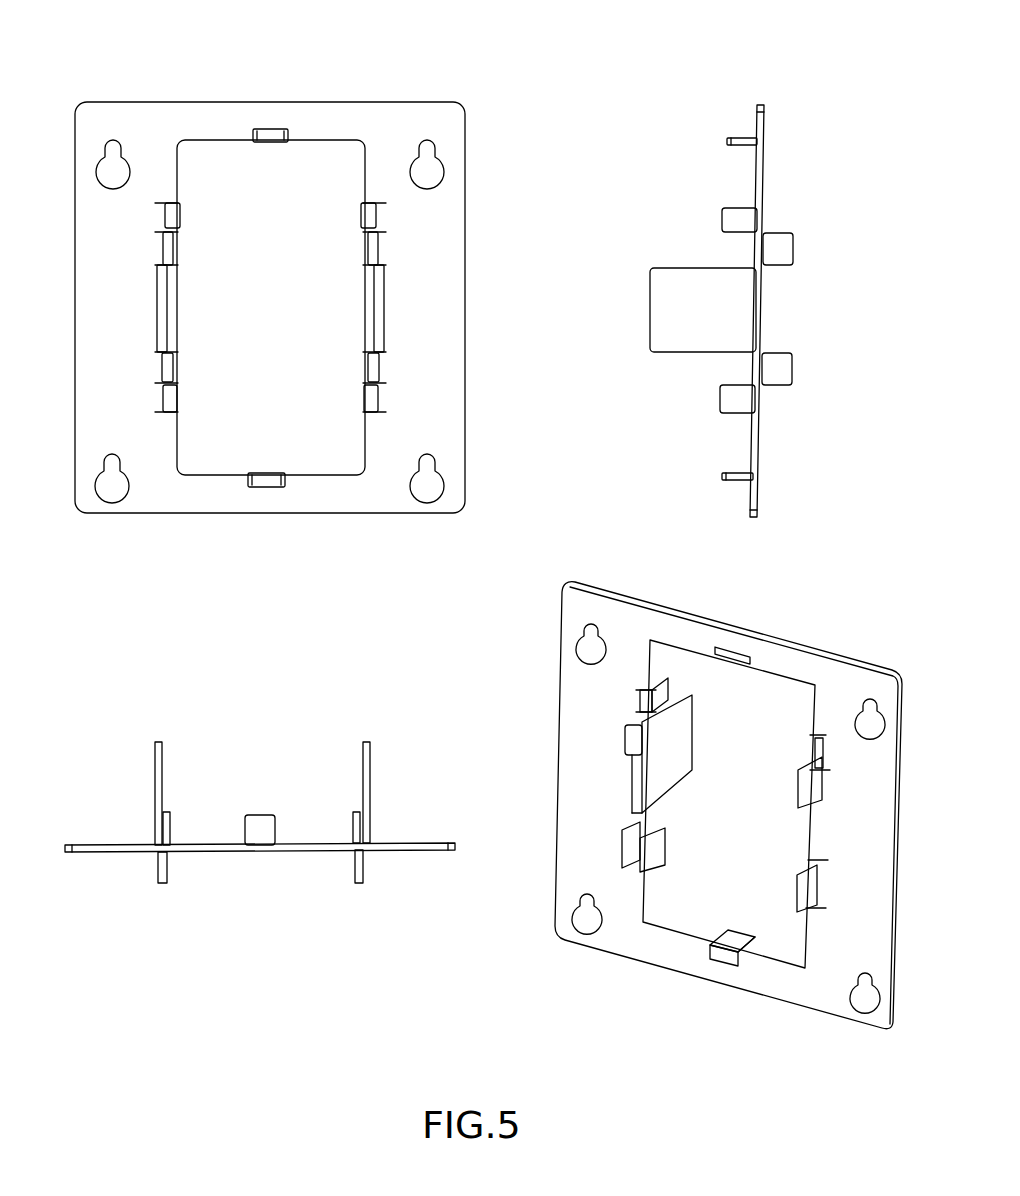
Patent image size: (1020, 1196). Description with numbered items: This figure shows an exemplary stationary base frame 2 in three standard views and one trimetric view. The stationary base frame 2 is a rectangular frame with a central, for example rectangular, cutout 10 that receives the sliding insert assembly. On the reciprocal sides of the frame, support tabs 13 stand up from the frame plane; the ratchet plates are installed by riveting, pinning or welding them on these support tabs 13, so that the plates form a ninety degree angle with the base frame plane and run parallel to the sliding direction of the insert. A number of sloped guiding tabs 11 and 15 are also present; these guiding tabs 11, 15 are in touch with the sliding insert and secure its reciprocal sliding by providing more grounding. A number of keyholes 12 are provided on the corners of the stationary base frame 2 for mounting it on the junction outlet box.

The stationary base frame 2 is at (349, 100).
The central cutout 10 is at (333, 455).
The sloped guiding tab 11 is at (723, 140).
The keyhole 12 is at (108, 503).
The support tab 13 is at (722, 307).
The sloped guiding tab 15 is at (713, 217).